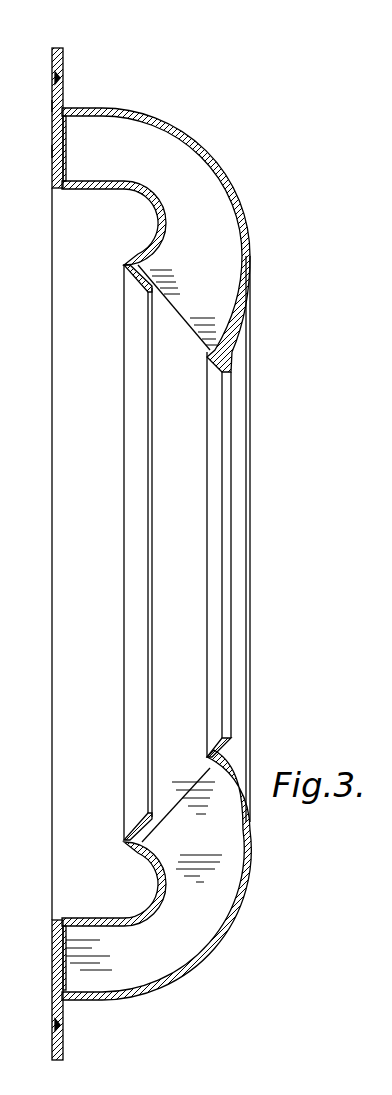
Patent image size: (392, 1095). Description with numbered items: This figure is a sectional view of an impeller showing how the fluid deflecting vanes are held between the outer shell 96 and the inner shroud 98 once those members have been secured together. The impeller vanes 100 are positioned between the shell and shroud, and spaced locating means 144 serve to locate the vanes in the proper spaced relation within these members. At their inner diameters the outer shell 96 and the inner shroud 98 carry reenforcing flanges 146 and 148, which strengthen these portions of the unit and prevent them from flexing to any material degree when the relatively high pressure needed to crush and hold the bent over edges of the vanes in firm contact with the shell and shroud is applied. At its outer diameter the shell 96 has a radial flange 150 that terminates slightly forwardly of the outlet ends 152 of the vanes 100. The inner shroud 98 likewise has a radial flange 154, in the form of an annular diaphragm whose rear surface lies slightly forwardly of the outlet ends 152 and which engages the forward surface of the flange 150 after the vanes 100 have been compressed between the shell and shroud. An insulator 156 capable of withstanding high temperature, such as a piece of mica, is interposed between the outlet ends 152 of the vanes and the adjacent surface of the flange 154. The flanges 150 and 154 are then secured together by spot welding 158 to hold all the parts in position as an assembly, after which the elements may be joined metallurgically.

The outer shell 96 is at (236, 206).
The inner shroud 98 is at (138, 190).
The impeller vanes 100 is at (178, 152).
The locating means 144 is at (80, 112).
The reenforcing flange 146 is at (226, 364).
The reenforcing flange 148 is at (126, 280).
The radial flange 150 is at (64, 68).
The outlet ends 152 is at (67, 124).
The radial flange 154 is at (52, 106).
The insulator 156 is at (52, 150).
The spot welding 158 is at (60, 78).